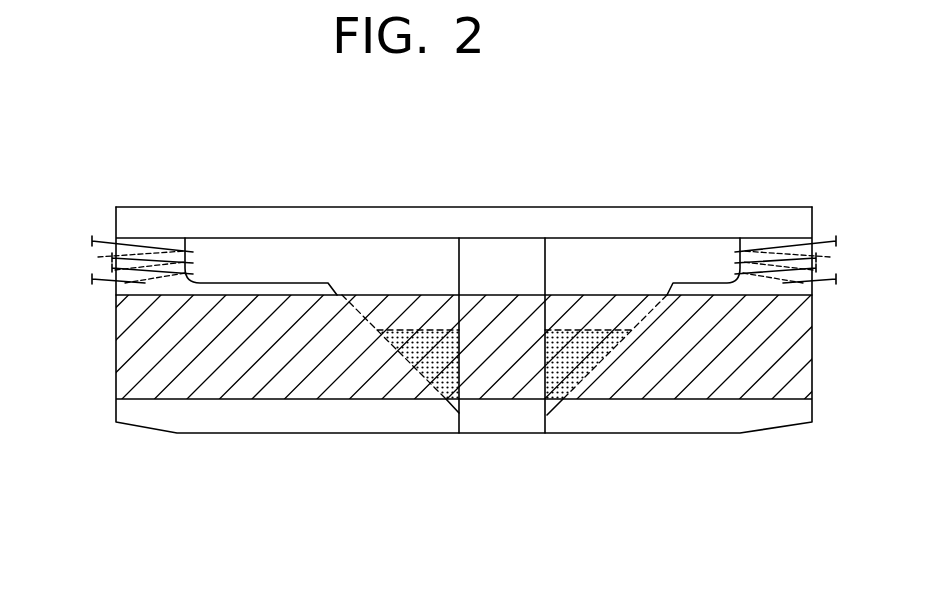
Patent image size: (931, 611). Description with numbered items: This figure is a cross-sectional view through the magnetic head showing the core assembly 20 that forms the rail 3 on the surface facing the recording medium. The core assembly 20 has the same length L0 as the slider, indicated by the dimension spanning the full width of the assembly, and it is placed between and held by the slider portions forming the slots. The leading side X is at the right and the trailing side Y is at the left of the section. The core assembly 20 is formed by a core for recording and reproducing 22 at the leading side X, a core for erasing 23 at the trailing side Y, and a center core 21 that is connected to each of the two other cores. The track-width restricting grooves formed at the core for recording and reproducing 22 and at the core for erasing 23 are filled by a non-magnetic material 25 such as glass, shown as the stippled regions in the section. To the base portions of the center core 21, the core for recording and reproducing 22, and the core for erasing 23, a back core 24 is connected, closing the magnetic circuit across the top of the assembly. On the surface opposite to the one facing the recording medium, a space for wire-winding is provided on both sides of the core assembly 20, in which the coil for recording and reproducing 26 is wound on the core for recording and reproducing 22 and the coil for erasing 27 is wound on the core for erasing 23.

The rail 3 is at (657, 445).
The core assembly 20 is at (444, 196).
The center core 21 is at (496, 265).
The core for recording and reproducing 22 is at (708, 288).
The core for erasing 23 is at (283, 283).
The back core 24 is at (665, 220).
The non-magnetic material 25 is at (600, 330).
The coil for recording and reproducing 26 is at (802, 298).
The coil for erasing 27 is at (137, 276).
The leading side X is at (831, 408).
The trailing side Y is at (88, 412).
The length L0 is at (116, 424).